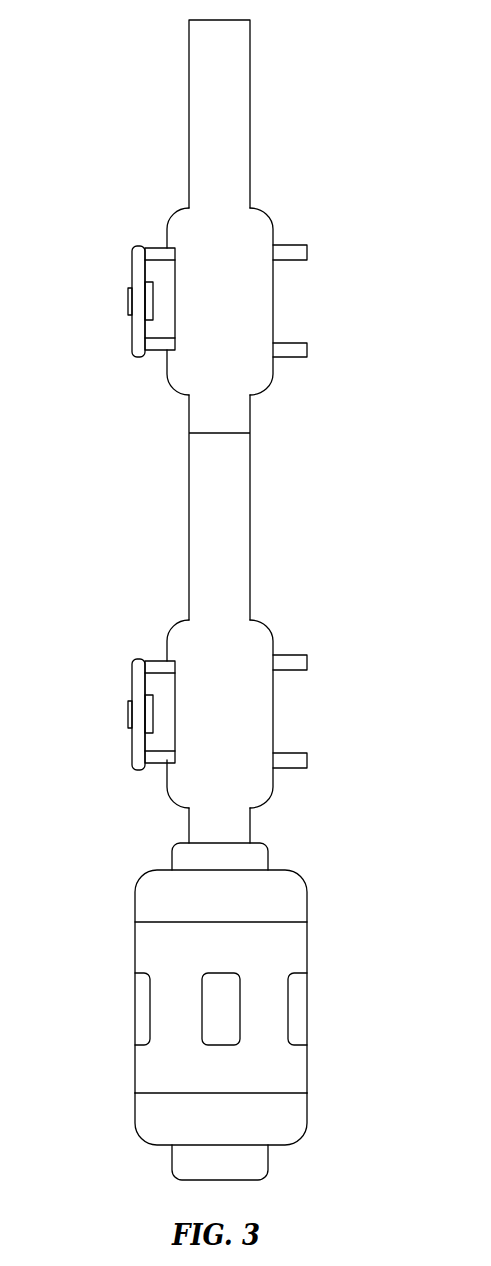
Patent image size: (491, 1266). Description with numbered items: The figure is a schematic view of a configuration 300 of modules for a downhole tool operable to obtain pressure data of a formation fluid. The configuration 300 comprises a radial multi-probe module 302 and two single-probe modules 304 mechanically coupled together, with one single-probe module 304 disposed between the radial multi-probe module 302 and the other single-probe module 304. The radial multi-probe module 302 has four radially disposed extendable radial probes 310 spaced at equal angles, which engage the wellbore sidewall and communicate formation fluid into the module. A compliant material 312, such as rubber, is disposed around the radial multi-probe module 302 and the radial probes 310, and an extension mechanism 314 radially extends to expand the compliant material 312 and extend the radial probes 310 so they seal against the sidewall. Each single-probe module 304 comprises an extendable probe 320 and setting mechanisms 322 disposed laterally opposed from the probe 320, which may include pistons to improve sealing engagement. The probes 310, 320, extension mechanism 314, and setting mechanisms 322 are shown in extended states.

The configuration 300 is at (308, 63).
The radial multi-probe module 302 is at (263, 860).
The single-probe module 304 is at (240, 121).
The radial probes 310 is at (207, 980).
The compliant material 312 is at (307, 952).
The extension mechanism 314 is at (300, 1120).
The probe 320 is at (128, 303).
The setting mechanisms 322 is at (307, 252).